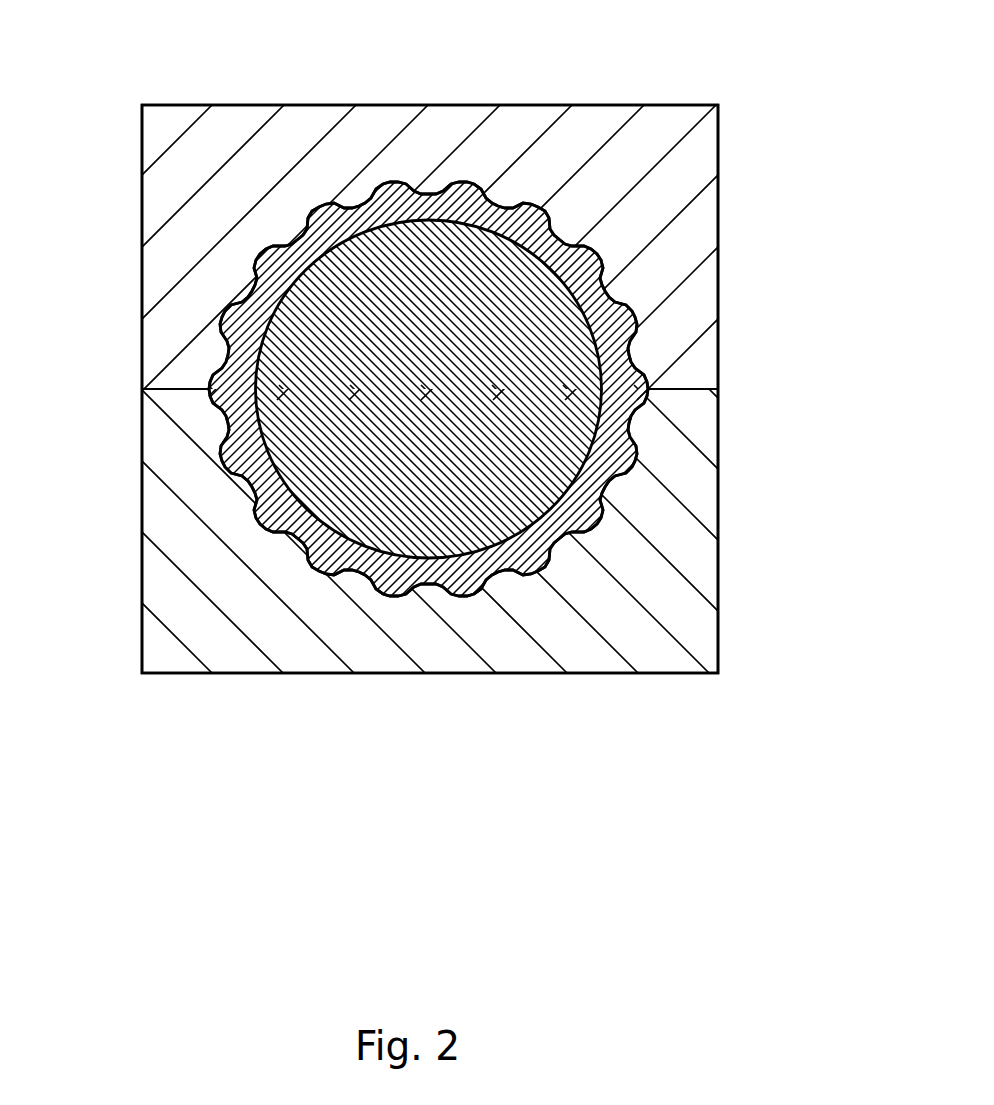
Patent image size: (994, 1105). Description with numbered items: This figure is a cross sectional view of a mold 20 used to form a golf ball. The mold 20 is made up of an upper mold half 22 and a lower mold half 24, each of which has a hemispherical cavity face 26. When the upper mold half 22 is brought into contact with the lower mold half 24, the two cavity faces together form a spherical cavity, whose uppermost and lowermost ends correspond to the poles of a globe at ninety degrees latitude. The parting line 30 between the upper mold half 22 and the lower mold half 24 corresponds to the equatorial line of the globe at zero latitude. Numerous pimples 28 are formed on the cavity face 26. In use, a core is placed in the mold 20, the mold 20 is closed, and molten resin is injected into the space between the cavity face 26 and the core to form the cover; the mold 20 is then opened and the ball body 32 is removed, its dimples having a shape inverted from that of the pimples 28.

The mold 20 is at (751, 396).
The upper mold half 22 is at (692, 238).
The lower mold half 24 is at (692, 547).
The cavity face 26 is at (352, 208).
The pimples 28 is at (505, 200).
The parting line 30 is at (186, 393).
The ball body 32 is at (417, 627).